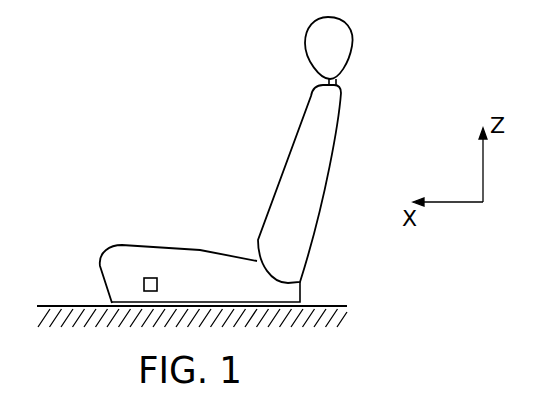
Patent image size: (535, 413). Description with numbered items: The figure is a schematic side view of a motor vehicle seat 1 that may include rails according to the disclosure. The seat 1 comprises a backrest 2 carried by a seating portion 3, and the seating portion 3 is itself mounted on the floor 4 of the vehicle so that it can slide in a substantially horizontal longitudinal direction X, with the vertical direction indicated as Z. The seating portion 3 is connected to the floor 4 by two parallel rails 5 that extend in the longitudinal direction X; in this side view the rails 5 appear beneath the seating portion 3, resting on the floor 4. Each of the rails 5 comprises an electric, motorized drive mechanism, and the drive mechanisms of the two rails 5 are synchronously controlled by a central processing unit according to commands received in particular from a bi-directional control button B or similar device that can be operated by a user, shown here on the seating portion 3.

The motor vehicle seat 1 is at (222, 126).
The backrest 2 is at (320, 168).
The seating portion 3 is at (140, 263).
The floor 4 is at (58, 305).
The rails 5 is at (316, 299).
The bi-directional control button B is at (153, 277).